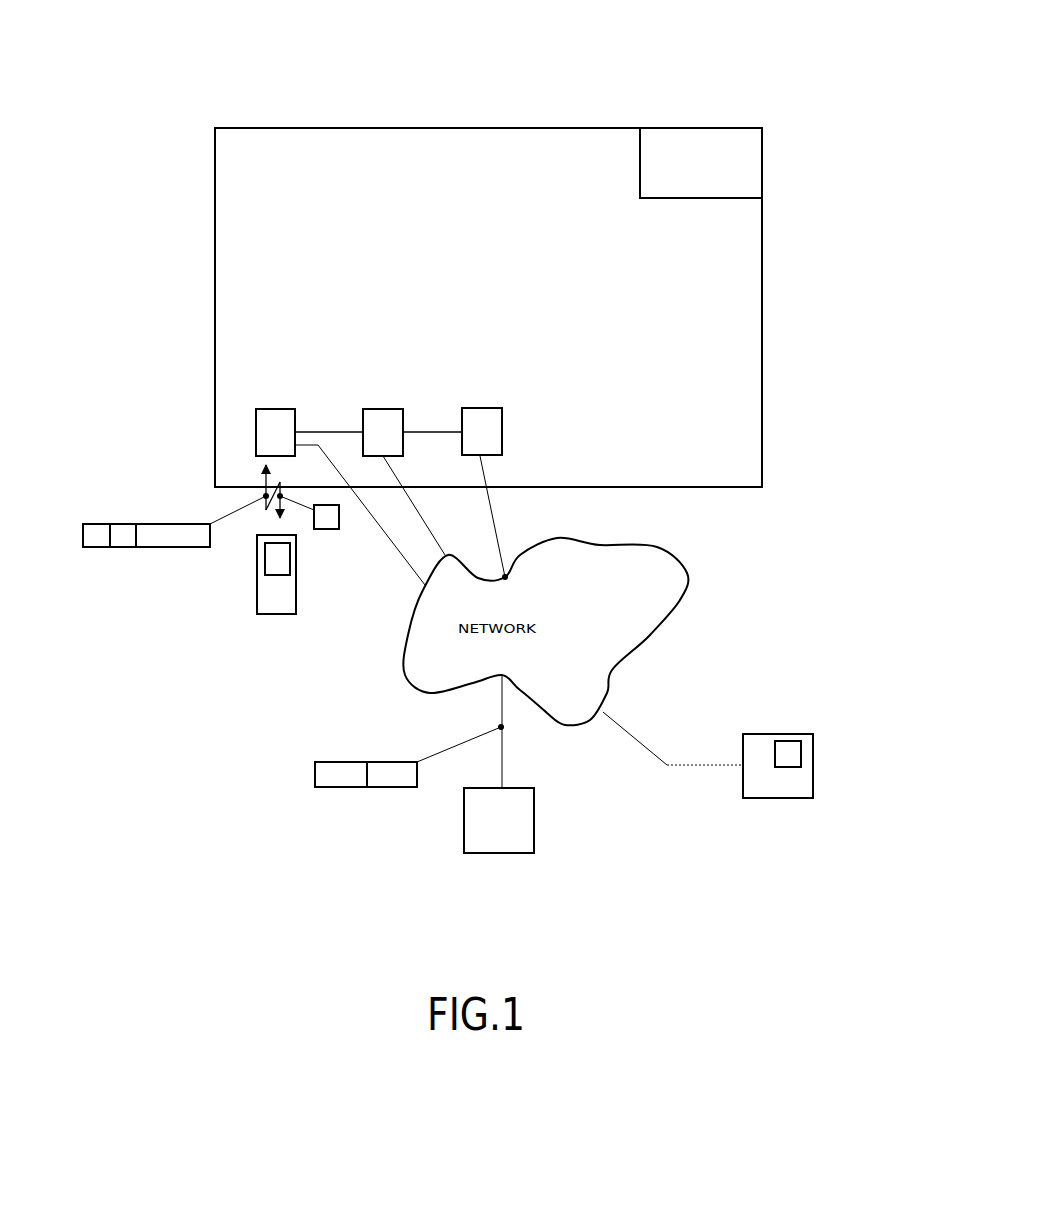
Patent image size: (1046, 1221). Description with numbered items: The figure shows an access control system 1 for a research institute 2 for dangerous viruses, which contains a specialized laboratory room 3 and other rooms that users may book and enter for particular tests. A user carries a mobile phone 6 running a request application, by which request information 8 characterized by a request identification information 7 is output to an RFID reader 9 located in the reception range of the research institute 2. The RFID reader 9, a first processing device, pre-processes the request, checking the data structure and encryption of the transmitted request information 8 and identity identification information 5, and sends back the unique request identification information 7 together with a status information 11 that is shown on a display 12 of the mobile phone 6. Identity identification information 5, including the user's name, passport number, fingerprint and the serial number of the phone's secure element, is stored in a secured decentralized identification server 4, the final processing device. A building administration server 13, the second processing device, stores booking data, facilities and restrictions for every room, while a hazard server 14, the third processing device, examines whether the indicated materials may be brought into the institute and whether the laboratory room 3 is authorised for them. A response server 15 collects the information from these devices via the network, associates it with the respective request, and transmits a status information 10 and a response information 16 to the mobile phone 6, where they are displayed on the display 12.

The access control system 1 is at (815, 107).
The research institute 2 is at (343, 152).
The laboratory room 3 is at (676, 148).
The identification server 4 is at (769, 785).
The identity identification information 5 is at (122, 536).
The mobile phone 6 is at (274, 600).
The request identification information 7 is at (98, 535).
The request information 8 is at (180, 537).
The RFID reader 9 is at (273, 420).
The status information 10 is at (340, 775).
The status information 11 is at (327, 516).
The display 12 is at (278, 565).
The building administration server 13 is at (380, 421).
The hazard server 14 is at (479, 420).
The response server 15 is at (490, 833).
The response information 16 is at (392, 775).